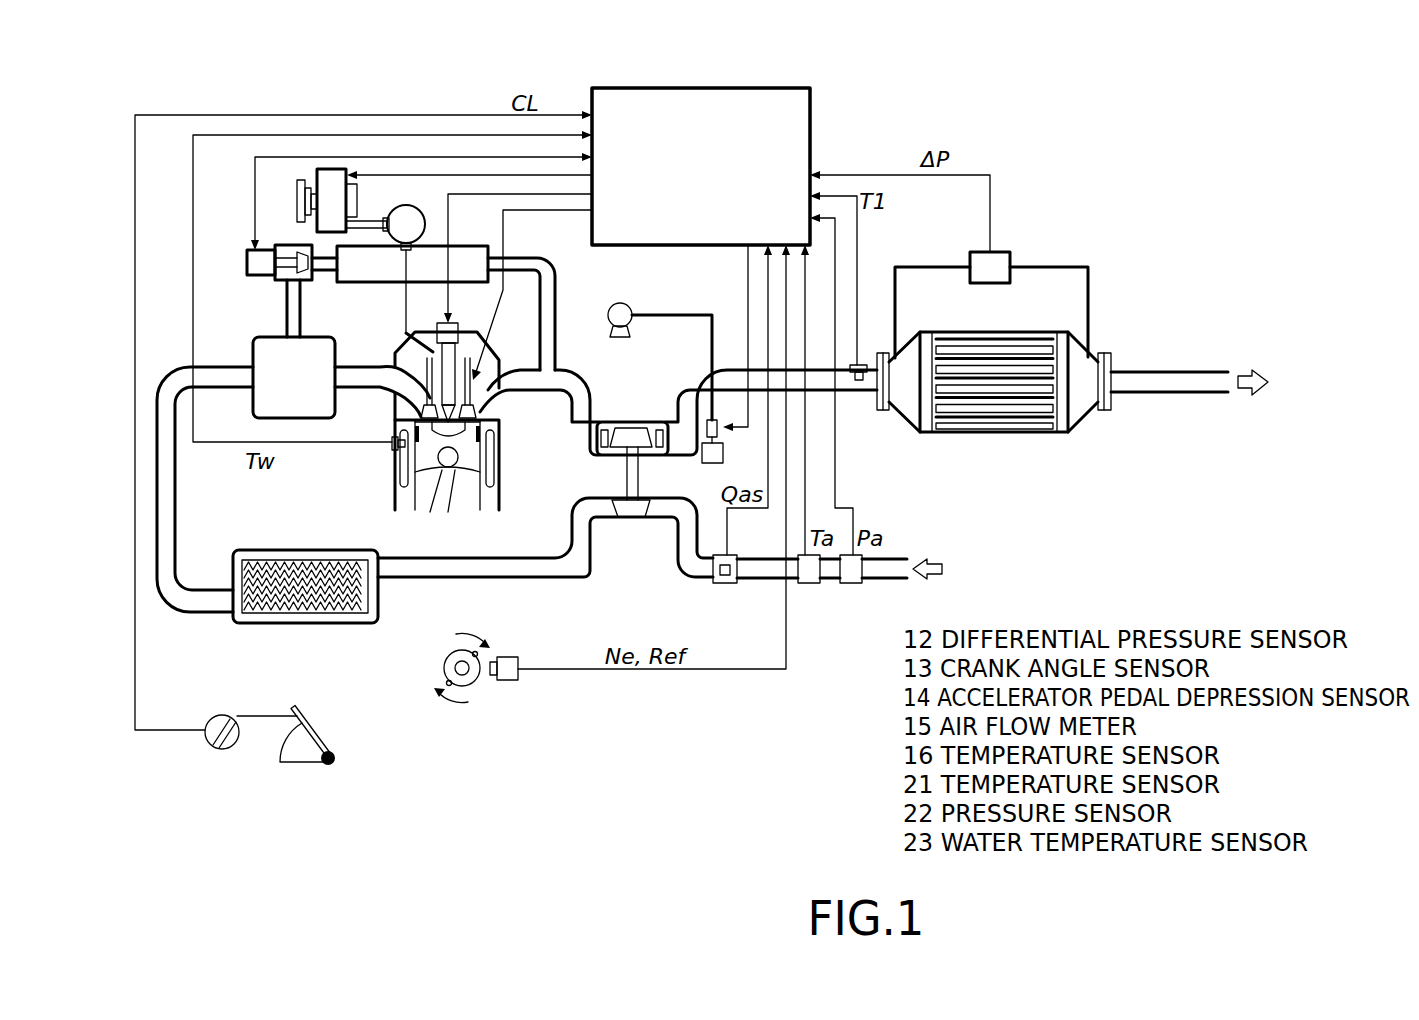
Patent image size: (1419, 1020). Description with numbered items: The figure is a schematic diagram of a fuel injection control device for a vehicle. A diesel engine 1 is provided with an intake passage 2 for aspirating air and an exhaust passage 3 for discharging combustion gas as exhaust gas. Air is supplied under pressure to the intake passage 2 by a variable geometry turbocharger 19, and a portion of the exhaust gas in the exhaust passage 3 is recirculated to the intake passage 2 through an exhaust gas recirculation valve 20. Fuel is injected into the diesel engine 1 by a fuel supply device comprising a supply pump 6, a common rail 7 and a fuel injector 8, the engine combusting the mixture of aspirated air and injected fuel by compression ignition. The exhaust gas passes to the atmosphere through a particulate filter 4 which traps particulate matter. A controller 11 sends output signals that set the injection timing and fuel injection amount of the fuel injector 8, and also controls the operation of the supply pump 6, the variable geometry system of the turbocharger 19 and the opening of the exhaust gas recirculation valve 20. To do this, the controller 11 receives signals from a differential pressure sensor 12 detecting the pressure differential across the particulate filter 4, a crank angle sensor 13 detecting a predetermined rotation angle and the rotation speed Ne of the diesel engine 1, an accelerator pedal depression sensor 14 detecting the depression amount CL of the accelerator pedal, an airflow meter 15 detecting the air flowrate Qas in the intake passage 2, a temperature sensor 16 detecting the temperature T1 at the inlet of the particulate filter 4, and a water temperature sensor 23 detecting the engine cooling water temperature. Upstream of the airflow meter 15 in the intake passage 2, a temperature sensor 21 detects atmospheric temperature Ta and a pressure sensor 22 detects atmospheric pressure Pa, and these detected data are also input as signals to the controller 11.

The diesel engine 1 is at (519, 418).
The intake passage 2 is at (363, 388).
The exhaust passage 3 is at (583, 383).
The particulate filter 4 is at (989, 433).
The supply pump 6 is at (330, 169).
The common rail 7 is at (410, 205).
The fuel injector 8 is at (469, 257).
The controller 11 is at (722, 91).
The differential pressure sensor 12 is at (997, 258).
The crank angle sensor 13 is at (509, 680).
The accelerator pedal depression sensor 14 is at (213, 738).
The airflow meter 15 is at (729, 583).
The temperature sensor 16 is at (867, 364).
The variable geometry turbocharger 19 is at (652, 473).
The exhaust gas recirculation valve 20 is at (261, 289).
The temperature sensor 21 is at (810, 583).
The pressure sensor 22 is at (853, 583).
The water temperature sensor 23 is at (393, 444).